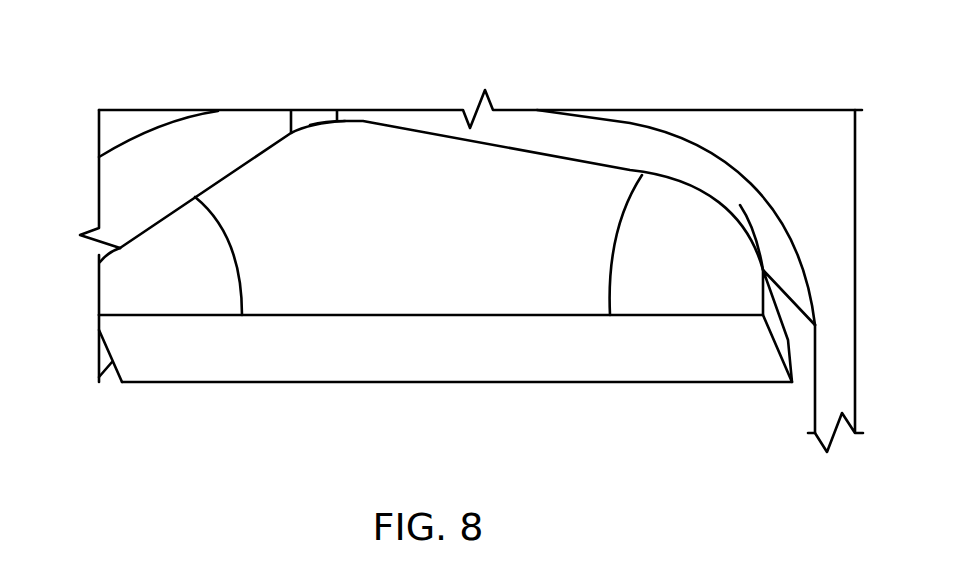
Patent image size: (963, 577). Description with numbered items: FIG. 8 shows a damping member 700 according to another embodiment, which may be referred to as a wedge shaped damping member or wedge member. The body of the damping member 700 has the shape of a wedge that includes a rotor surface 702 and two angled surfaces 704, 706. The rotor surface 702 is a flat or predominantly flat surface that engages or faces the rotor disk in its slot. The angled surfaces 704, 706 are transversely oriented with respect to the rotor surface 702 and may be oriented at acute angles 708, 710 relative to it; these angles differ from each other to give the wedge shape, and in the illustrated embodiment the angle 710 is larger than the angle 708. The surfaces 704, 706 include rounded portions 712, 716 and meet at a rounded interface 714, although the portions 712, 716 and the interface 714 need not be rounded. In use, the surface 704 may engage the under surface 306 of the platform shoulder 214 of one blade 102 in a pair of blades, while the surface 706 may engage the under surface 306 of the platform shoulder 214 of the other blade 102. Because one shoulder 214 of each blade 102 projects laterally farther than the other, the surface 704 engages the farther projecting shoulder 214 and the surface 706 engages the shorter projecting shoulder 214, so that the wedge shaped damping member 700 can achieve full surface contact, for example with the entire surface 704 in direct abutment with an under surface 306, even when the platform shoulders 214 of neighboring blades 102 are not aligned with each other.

The blade 102 is at (92, 203).
The platform shoulder 214 is at (117, 122).
The under surface 306 is at (230, 140).
The damping member 700 is at (82, 305).
The rotor surface 702 is at (428, 343).
The angled surface 704 is at (527, 150).
The angled surface 706 is at (203, 187).
The acute angle 708 is at (608, 248).
The acute angle 710 is at (240, 260).
The rounded portion 712 is at (720, 207).
The rounded interface 714 is at (333, 133).
The rounded portion 716 is at (127, 250).